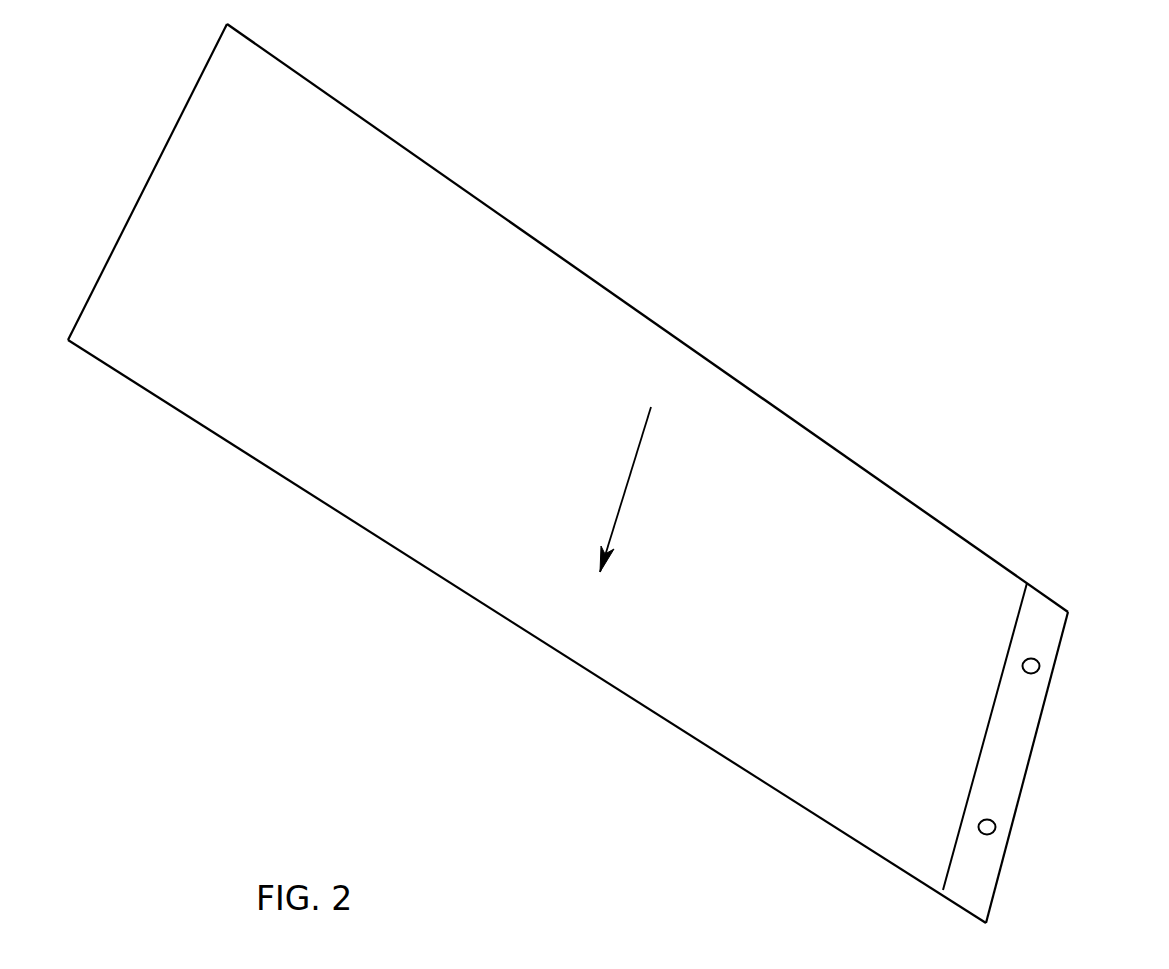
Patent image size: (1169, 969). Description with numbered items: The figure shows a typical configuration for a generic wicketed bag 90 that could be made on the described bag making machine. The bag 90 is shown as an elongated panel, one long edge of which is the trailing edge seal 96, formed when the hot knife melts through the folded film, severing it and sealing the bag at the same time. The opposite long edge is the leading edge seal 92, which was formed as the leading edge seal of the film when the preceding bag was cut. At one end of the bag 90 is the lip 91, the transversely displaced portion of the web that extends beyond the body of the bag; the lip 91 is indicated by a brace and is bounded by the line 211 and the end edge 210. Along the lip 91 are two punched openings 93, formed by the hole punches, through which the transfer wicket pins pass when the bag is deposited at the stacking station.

The bag 90 is at (309, 311).
The trailing edge seal 96 is at (662, 328).
The leading edge seal 92 is at (527, 631).
The lip 91 is at (1077, 599).
The openings 93 is at (1040, 666).
The inner line 211 is at (988, 735).
The end edge 210 is at (1025, 789).